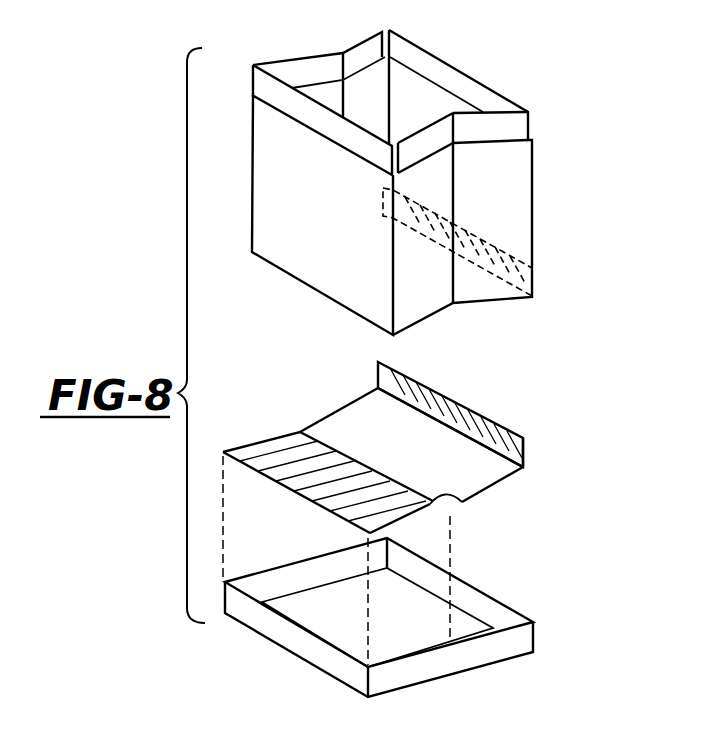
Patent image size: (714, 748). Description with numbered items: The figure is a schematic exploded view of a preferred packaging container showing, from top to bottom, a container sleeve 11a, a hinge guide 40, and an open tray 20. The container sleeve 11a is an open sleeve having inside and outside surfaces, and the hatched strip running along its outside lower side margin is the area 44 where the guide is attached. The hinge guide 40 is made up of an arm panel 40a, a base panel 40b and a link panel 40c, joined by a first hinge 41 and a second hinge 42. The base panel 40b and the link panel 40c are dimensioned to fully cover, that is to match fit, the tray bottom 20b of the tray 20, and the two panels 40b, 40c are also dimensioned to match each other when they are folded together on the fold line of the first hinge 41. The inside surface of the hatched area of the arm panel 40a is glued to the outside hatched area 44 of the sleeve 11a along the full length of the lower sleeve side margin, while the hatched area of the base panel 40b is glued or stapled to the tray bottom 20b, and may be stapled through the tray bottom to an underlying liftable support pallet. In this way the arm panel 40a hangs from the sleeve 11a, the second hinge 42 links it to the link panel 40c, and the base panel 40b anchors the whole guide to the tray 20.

The container sleeve 11a is at (302, 281).
The reinforcing band 44 is at (343, 103).
The hinge guide 40 is at (443, 395).
The arm panel 40a is at (523, 458).
The base panel 40b is at (270, 457).
The link panel 40c is at (427, 453).
The first hinge 41 is at (457, 504).
The second hinge 42 is at (388, 395).
The tray 20 is at (462, 672).
The tray bottom 20b is at (392, 627).